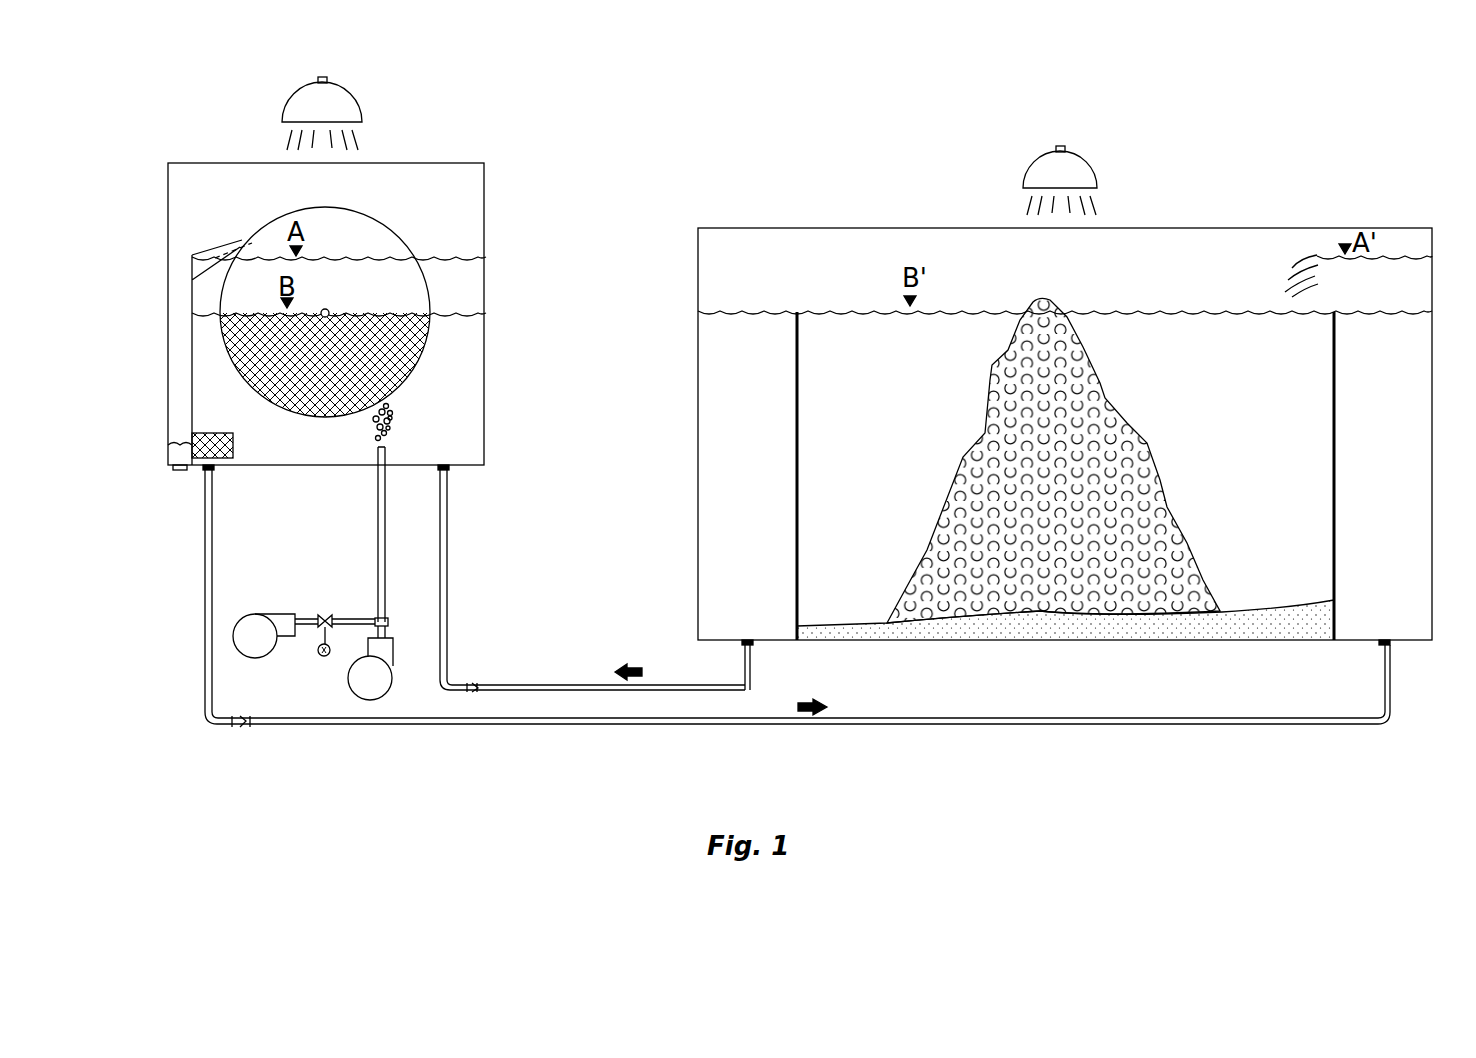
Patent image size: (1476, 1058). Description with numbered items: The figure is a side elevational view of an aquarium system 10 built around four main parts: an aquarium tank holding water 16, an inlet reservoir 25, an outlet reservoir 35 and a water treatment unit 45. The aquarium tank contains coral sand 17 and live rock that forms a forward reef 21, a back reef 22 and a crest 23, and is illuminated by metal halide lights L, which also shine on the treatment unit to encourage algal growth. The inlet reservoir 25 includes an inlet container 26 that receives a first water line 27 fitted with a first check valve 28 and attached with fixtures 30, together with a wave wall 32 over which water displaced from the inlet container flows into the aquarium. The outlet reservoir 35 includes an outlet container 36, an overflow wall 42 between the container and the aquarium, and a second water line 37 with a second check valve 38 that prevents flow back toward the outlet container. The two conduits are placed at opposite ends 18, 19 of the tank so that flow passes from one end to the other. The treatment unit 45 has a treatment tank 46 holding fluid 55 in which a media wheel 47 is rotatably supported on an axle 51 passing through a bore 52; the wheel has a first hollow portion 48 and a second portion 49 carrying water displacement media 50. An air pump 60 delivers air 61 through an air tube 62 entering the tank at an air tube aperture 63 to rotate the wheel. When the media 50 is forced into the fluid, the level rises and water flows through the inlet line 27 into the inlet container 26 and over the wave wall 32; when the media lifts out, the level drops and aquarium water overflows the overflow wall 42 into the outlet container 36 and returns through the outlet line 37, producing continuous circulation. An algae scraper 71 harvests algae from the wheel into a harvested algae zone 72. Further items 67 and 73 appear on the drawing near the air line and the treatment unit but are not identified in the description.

The aquarium system 10 is at (1258, 186).
The water 16 is at (1235, 381).
The coral sand 17 is at (812, 628).
The end of aquarium tank 18 is at (710, 642).
The end of aquarium tank 19 is at (1400, 642).
The forward reef 21 is at (1147, 445).
The back reef 22 is at (962, 454).
The crest 23 is at (1055, 302).
The inlet reservoir 25 is at (1432, 642).
The inlet container 26 is at (1402, 475).
The first water line 27 is at (1240, 728).
The first check valve 28 is at (240, 728).
The fixtures 30 is at (212, 471).
The wave wall 32 is at (1336, 370).
The outlet reservoir 35 is at (668, 688).
The outlet container 36 is at (762, 475).
The second water line 37 is at (590, 688).
The second check valve 38 is at (472, 684).
The overflow wall 42 is at (799, 368).
The water treatment unit 45 is at (484, 205).
The treatment tank 46 is at (434, 203).
The media wheel 47 is at (405, 238).
The first hollow portion 48 is at (354, 239).
The second portion 49 is at (408, 340).
The water displacement media 50 is at (325, 368).
The axle 51 is at (329, 311).
The bore 52 is at (336, 313).
The fluid 55 is at (464, 405).
The air pump 60 is at (240, 642).
The air 61 is at (392, 416).
The air tube 62 is at (386, 535).
The air tube aperture 63 is at (386, 470).
The valve and gauge 67 is at (318, 624).
The algae scraper 71 is at (192, 253).
The harvested algae zone 72 is at (192, 450).
The drain fitting 73 is at (180, 471).
The metal halide lights L is at (352, 96).